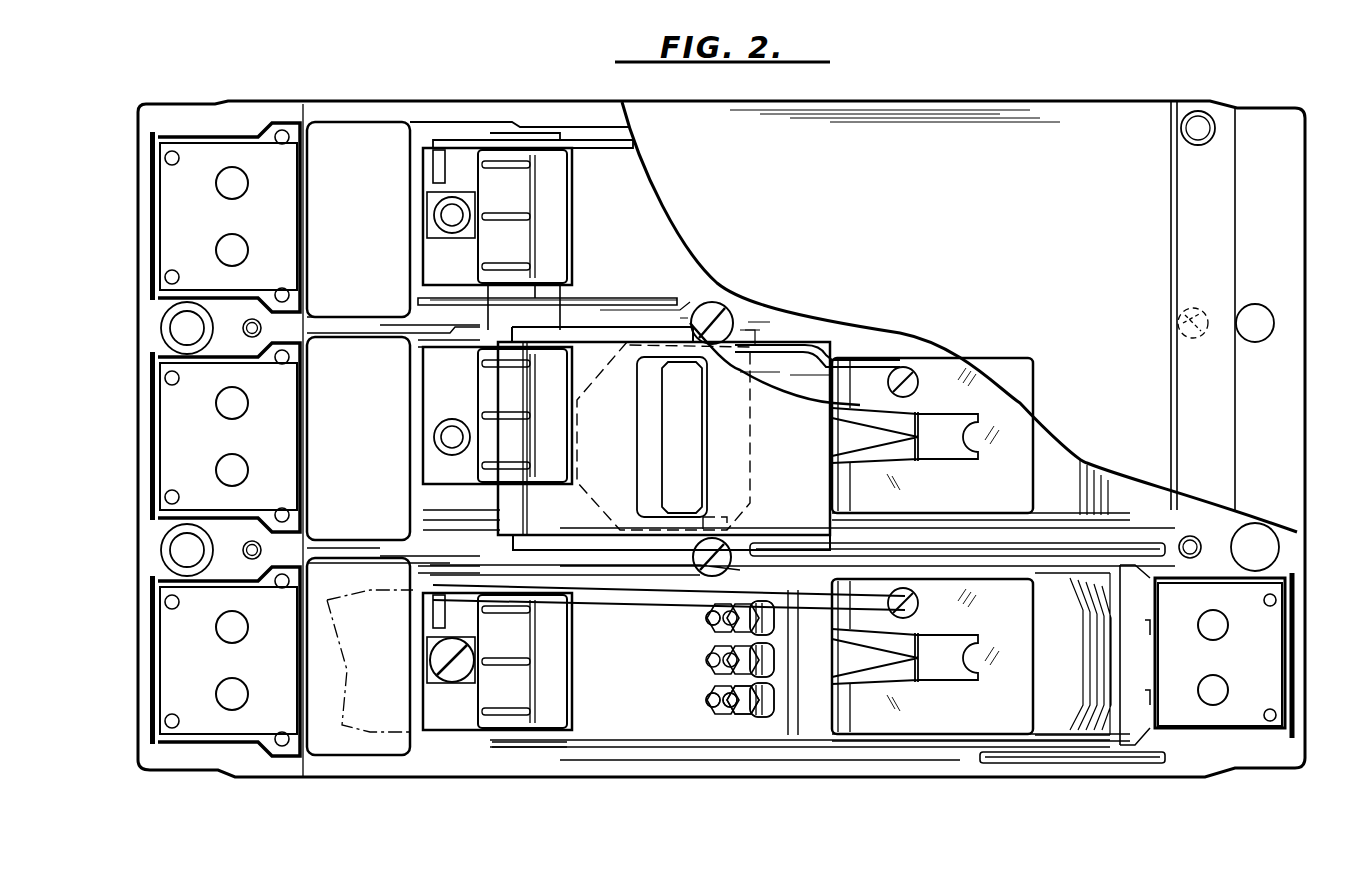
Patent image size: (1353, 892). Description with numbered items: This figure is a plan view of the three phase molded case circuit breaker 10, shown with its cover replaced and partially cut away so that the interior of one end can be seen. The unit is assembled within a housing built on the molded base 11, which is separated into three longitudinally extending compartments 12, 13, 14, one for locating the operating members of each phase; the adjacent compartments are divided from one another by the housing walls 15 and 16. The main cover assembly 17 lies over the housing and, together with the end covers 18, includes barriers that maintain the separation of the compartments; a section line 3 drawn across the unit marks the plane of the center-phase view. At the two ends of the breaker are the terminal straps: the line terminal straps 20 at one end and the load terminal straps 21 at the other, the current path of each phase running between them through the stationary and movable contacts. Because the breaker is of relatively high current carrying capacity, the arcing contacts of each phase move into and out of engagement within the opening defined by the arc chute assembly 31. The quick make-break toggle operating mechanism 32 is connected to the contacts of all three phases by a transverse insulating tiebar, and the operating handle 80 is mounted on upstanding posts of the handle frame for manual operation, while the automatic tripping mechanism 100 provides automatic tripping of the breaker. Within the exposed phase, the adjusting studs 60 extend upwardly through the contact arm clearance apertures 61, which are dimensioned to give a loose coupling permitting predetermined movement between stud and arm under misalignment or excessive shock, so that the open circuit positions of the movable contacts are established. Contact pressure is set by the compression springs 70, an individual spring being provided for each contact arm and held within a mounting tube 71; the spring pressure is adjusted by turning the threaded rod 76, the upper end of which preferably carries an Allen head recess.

The section line 3- 3 is at (178, 438).
The circuit breaker 10 is at (1052, 86).
The molded base 11 is at (178, 752).
The compartment 12 is at (425, 130).
The compartment 13 is at (456, 340).
The compartment 14 is at (448, 565).
The housing wall 15 is at (612, 316).
The housing wall 16 is at (578, 558).
The main cover assembly 17 is at (935, 255).
The end cover 18 is at (1283, 165).
The line terminal strap 20 is at (1265, 665).
The load terminal strap 21 is at (227, 439).
The arc chute assembly 31 is at (1000, 497).
The operating mechanism 32 is at (797, 338).
The adjusting stud 60 is at (706, 620).
The contact arm clearance aperture 61 is at (712, 630).
The compression spring 70 is at (745, 714).
The mounting tube 71 is at (770, 620).
The threaded rod 76 is at (730, 702).
The operating handle 80 is at (696, 450).
The automatic tripping mechanism 100 is at (393, 438).